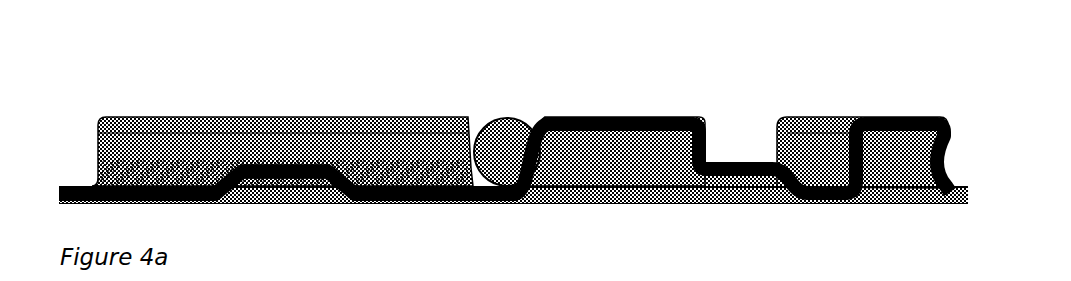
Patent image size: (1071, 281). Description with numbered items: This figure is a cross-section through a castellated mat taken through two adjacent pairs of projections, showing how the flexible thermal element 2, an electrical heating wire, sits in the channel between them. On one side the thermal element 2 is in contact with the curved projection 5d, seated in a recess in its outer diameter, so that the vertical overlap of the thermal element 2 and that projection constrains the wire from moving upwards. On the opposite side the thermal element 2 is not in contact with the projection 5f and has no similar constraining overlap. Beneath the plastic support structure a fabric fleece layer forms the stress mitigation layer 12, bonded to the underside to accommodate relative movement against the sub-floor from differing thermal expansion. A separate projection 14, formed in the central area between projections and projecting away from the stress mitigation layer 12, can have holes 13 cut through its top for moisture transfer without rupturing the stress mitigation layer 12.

The thermal element 2 is at (506, 145).
The projection 5d is at (587, 118).
The projection 5f is at (189, 115).
The stress mitigation layer 12 is at (320, 202).
The holes 13 is at (296, 165).
The projection 14 is at (243, 197).